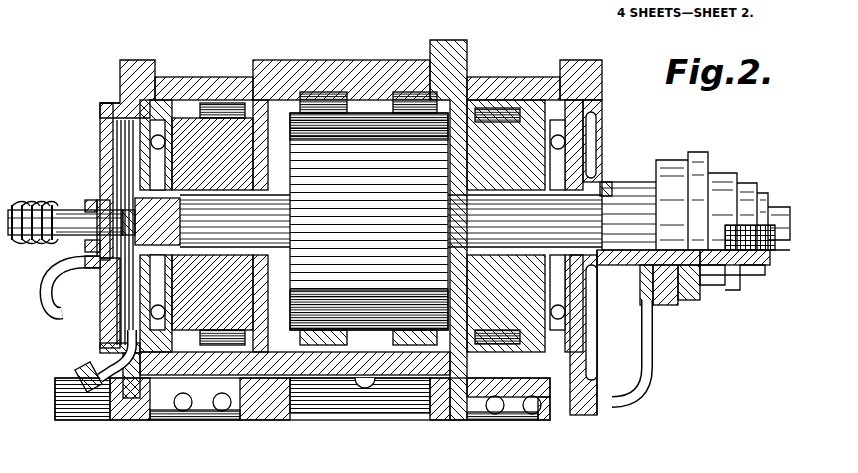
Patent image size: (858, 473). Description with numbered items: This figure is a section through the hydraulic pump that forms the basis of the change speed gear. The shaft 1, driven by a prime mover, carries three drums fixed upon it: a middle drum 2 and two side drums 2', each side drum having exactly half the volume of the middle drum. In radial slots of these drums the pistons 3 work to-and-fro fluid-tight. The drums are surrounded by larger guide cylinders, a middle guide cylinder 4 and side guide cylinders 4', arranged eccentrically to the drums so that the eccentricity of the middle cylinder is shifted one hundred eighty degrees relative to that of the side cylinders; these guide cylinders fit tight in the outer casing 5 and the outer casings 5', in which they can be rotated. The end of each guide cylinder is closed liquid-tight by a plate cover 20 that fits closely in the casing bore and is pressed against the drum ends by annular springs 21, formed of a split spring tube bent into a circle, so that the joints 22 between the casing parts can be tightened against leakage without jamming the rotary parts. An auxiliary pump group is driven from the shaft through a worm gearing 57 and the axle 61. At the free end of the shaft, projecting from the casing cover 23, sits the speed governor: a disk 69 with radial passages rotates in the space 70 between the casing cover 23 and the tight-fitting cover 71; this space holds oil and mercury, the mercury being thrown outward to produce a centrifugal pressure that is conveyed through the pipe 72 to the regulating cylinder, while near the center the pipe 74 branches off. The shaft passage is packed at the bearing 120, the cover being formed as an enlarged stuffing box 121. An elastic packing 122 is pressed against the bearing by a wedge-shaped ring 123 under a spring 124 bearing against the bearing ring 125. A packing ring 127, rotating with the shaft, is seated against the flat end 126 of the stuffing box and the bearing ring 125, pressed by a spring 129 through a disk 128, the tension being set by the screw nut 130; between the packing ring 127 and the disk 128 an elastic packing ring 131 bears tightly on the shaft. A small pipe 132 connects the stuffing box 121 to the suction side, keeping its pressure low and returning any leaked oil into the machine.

The shaft 1 is at (482, 215).
The middle drum 2 is at (369, 176).
The side drum 2' is at (354, 177).
The pistons 3 is at (325, 135).
The middle guide cylinder 4 is at (368, 184).
The side guide cylinder 4' is at (352, 194).
The outer casing 5 is at (341, 56).
The outer casing 5' is at (363, 60).
The plate cover 20 is at (108, 148).
The annular spring 21 is at (106, 137).
The joints 22 is at (137, 60).
The casing cover 23 is at (120, 62).
The worm gearing 57 is at (65, 238).
The axle 61 is at (62, 215).
The disk 69 is at (127, 177).
The space 70 is at (120, 158).
The tight-fitting cover 71 is at (100, 108).
The pipe 72 is at (88, 375).
The pipe 74 is at (73, 284).
The bearing 120 is at (575, 197).
The stuffing box 121 is at (590, 330).
The elastic packing 122 is at (592, 192).
The wedge-shaped ring 123 is at (603, 265).
The spring 124 is at (650, 303).
The bearing ring 125 is at (670, 240).
The flat end 126 is at (668, 175).
The packing ring 127 is at (680, 308).
The disk 128 is at (692, 300).
The spring 129 is at (714, 278).
The screw nut 130 is at (748, 268).
The elastic packing ring 131 is at (703, 240).
The small pipe 132 is at (625, 407).